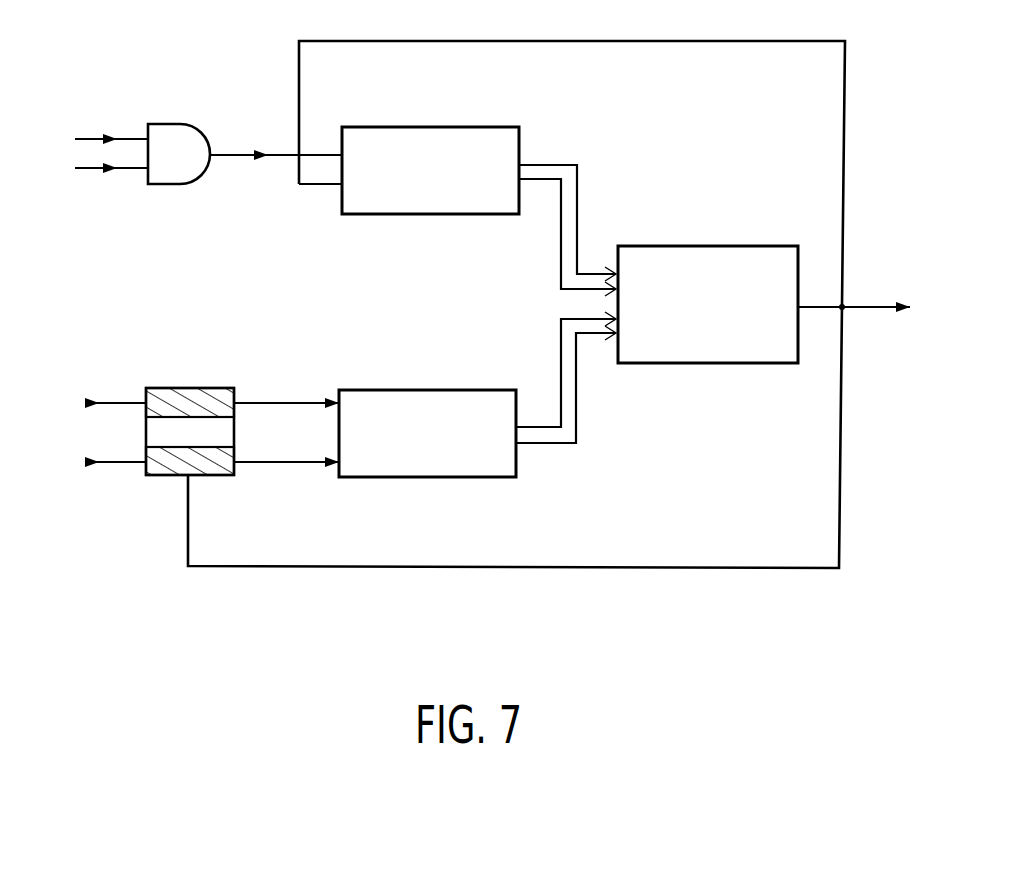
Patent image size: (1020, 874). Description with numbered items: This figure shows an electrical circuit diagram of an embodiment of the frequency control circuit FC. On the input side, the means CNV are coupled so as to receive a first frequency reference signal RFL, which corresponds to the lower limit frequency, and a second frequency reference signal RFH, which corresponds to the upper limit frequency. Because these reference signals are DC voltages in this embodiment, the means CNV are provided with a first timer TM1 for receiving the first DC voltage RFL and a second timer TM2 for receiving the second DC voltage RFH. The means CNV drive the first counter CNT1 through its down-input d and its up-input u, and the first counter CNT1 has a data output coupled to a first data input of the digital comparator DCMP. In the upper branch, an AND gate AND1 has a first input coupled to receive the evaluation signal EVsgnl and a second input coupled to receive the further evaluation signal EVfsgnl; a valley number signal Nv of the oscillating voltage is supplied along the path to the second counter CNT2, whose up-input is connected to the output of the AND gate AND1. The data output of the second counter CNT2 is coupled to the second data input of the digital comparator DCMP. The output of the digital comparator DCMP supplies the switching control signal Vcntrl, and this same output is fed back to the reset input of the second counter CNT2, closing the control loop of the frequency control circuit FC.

The frequency control circuit FC is at (557, 629).
The AND gate AND1 is at (172, 122).
The further evaluation signal EVfsgnl is at (83, 130).
The evaluation signal EVsgnl is at (80, 172).
The valley number signal Nv is at (237, 150).
The second counter CNT2 is at (425, 217).
The digital comparator DCMP is at (701, 242).
The switching control signal Vcntrl is at (870, 313).
The means for receiving frequency reference signals CNV is at (158, 478).
The second timer TM2 is at (166, 395).
The first timer TM1 is at (217, 470).
The second frequency reference signal RFH is at (91, 397).
The first frequency reference signal RFL is at (91, 456).
The down-input d is at (278, 400).
The up-input u is at (287, 458).
The first counter CNT1 is at (425, 388).